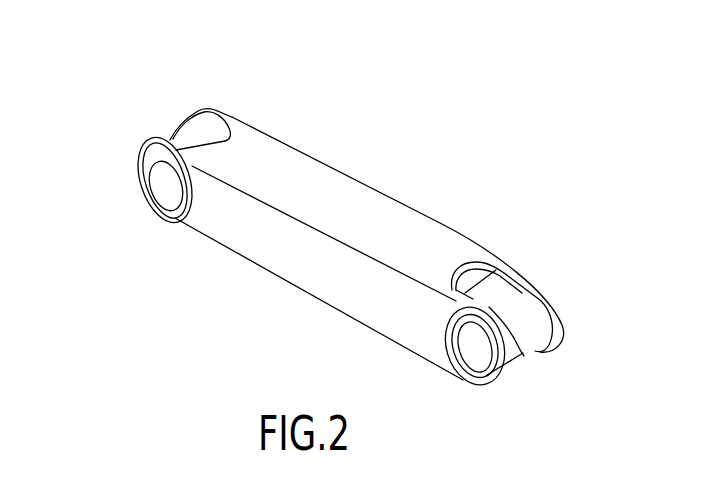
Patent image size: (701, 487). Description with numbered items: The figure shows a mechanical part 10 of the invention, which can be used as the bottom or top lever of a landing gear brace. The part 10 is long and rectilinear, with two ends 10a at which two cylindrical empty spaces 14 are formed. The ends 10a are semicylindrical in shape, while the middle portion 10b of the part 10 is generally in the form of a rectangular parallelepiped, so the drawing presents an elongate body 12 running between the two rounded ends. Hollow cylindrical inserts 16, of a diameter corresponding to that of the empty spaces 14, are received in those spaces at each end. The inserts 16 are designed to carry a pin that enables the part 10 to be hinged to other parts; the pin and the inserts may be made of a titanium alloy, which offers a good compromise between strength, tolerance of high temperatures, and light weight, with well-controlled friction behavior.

The mechanical part 10 is at (524, 153).
The ends 10a is at (186, 90).
The middle portion 10b is at (338, 187).
The link body 12 is at (328, 292).
The cylindrical empty spaces 14 is at (150, 193).
The hollow cylindrical inserts 16 is at (184, 140).